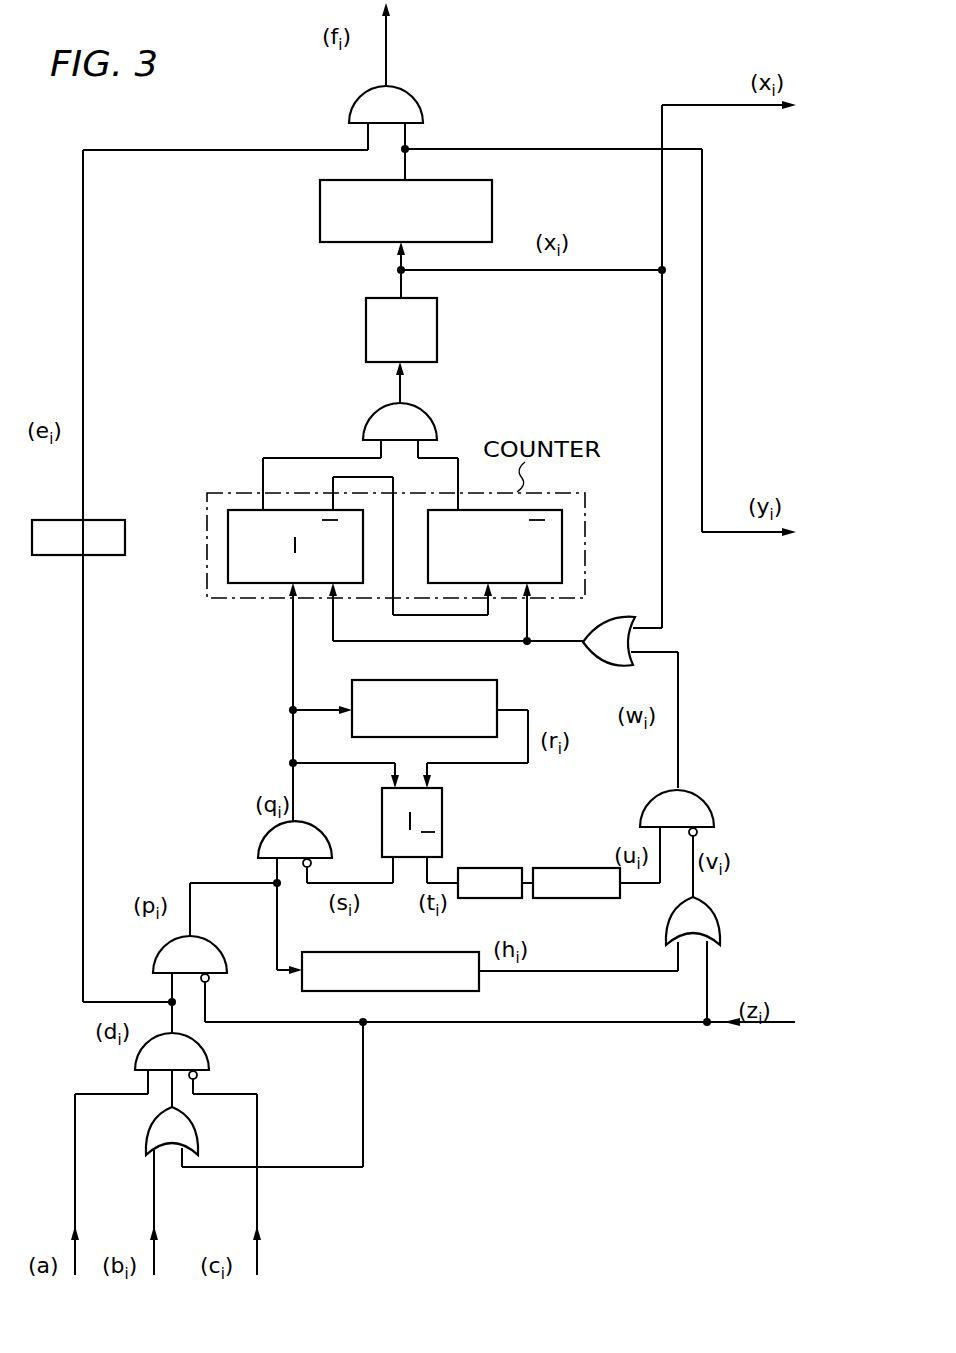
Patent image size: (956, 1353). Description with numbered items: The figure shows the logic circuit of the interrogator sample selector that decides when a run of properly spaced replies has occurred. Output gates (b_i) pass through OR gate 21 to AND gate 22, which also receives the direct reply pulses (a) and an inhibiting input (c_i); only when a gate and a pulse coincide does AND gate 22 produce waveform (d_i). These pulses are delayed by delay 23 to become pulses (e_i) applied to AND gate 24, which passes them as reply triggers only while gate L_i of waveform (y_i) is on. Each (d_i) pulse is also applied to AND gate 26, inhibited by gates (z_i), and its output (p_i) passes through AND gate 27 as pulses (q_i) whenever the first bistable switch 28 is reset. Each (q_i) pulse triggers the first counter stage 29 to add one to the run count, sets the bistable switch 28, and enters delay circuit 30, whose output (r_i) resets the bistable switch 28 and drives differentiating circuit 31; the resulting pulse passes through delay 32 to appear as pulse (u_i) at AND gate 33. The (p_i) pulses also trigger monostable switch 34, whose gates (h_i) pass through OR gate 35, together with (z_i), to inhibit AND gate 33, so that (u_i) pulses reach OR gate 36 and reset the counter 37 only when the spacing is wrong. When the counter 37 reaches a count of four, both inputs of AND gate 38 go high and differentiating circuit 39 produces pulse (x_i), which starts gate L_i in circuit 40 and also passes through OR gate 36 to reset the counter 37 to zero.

The OR gate 21 is at (196, 1129).
The AND gate 22 is at (207, 1053).
The delay 23 is at (127, 531).
The AND gate 24 is at (416, 98).
The AND gate 26 is at (220, 953).
The AND gate 27 is at (263, 846).
The bistable switch RS-1 28 is at (382, 818).
The RST-1 29 is at (238, 585).
The delay circuit 30 is at (490, 694).
The differentiating circuit 31 is at (495, 868).
The delay 32 is at (573, 898).
The AND gate 33 is at (702, 797).
The monostable switch 34 is at (478, 992).
The OR gate 35 is at (718, 921).
The OR gate 36 is at (612, 616).
The counter 37 is at (563, 528).
The AND gate 38 is at (432, 418).
The differentiating circuit 39 is at (437, 331).
The circuit 40 is at (320, 212).